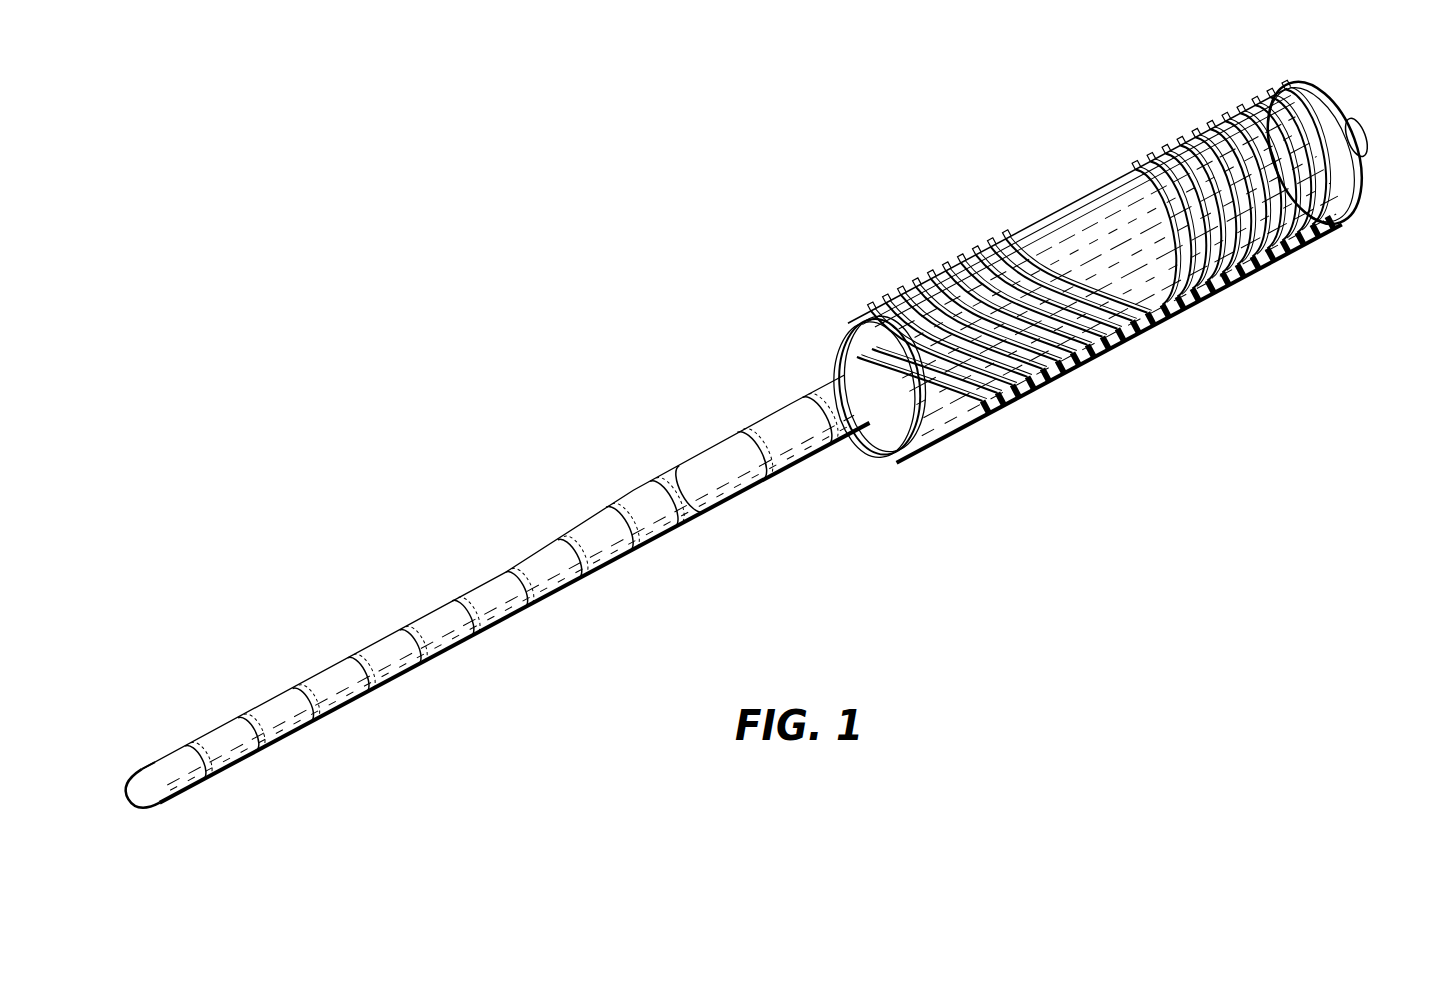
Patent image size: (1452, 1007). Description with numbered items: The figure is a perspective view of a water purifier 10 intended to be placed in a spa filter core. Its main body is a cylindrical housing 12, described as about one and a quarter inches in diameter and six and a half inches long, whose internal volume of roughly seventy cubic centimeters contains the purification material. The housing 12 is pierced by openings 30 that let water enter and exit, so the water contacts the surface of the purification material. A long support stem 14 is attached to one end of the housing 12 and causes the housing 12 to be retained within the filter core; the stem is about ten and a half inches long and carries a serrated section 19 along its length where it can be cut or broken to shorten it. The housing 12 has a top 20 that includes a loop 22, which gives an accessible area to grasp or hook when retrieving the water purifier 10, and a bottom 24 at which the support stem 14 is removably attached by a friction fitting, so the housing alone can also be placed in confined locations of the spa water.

The water purifier 10 is at (776, 246).
The housing 12 is at (1084, 218).
The support stem 14 is at (644, 484).
The serrated section 19 is at (281, 697).
The top 20 is at (1305, 97).
The loop 22 is at (1353, 118).
The bottom 24 is at (840, 348).
The openings 30 is at (966, 292).